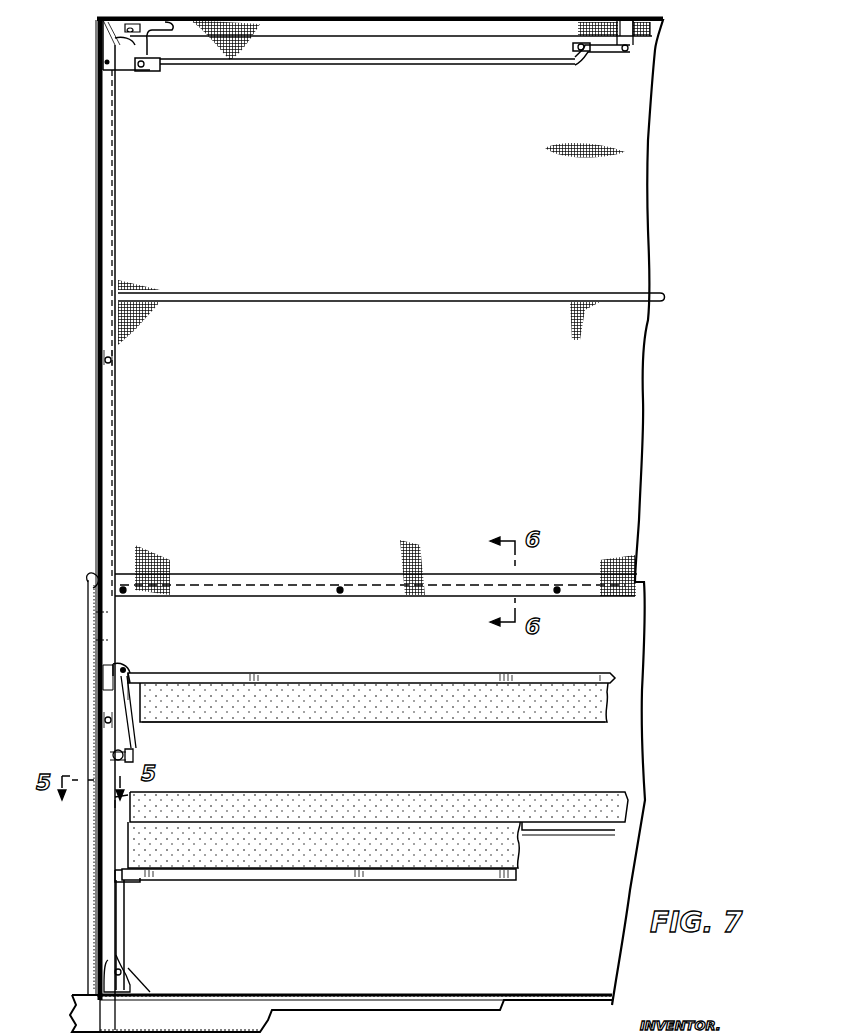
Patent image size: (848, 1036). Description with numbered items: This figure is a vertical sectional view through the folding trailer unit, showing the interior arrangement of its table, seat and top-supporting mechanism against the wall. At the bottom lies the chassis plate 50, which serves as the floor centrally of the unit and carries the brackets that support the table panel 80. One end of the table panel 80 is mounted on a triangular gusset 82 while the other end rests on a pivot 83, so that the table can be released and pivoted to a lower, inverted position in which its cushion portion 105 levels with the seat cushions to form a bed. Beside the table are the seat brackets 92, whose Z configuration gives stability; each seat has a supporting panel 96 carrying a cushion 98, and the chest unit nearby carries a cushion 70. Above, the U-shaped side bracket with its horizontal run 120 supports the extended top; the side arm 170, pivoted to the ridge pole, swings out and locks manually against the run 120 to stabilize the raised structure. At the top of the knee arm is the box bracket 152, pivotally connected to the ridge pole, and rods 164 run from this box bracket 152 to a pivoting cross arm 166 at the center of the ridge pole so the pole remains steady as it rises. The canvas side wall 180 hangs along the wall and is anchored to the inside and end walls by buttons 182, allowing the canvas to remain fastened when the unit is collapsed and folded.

The chassis plate 50 is at (414, 996).
The cushion 70 is at (362, 794).
The table panel 80 is at (308, 676).
The triangular gusset 82 is at (131, 727).
The pivot 83 is at (135, 757).
The seat bracket 92 is at (126, 914).
The supporting panel 96 is at (341, 872).
The cushion 98 is at (407, 856).
The cushion portion 105 is at (286, 716).
The horizontal run 120 is at (360, 296).
The box bracket 152 is at (127, 68).
The rod 164 is at (393, 60).
The pivoting cross arm 166 is at (607, 48).
The side arm 170 is at (107, 42).
The canvas side wall 180 is at (625, 406).
The button 182 is at (125, 592).